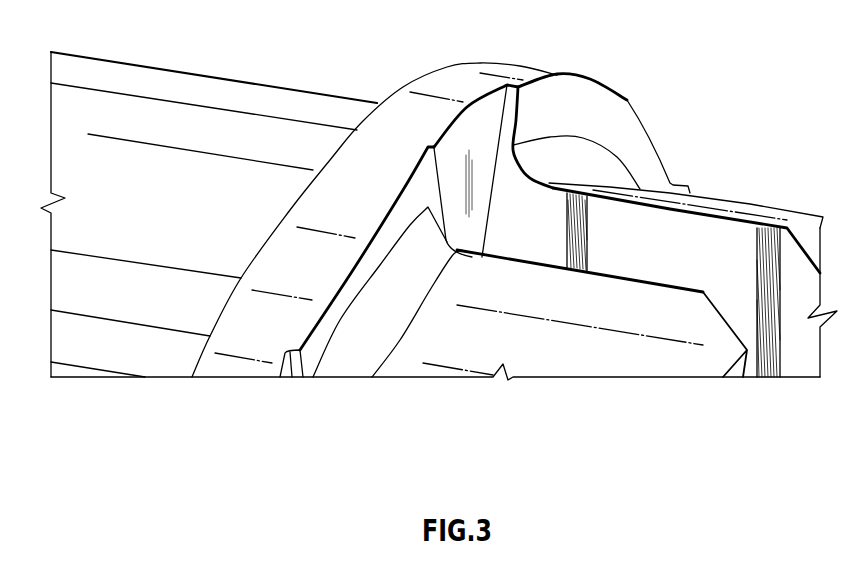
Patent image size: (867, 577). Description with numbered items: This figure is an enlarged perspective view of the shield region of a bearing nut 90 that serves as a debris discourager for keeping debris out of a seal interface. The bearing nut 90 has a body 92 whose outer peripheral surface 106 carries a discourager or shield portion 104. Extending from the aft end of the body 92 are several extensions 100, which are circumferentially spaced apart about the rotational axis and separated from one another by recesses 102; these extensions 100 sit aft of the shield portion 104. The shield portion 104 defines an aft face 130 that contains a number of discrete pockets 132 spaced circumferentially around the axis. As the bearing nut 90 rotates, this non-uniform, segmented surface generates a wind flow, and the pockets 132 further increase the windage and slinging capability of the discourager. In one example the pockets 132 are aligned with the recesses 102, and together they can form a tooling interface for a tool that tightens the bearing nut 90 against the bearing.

The bearing nut 90 is at (717, 90).
The body 92 is at (172, 237).
The extensions 100 is at (670, 353).
The recesses 102 is at (792, 362).
The shield portion 104 is at (559, 93).
The outer peripheral surface 106 is at (352, 115).
The aft face 130 is at (608, 104).
The pockets 132 is at (475, 133).